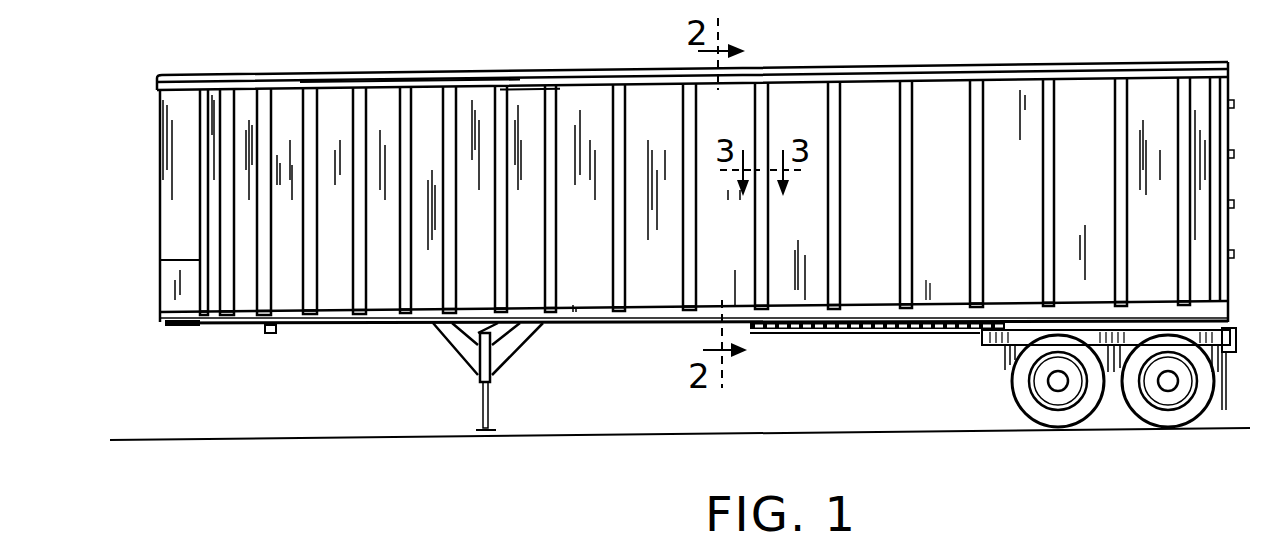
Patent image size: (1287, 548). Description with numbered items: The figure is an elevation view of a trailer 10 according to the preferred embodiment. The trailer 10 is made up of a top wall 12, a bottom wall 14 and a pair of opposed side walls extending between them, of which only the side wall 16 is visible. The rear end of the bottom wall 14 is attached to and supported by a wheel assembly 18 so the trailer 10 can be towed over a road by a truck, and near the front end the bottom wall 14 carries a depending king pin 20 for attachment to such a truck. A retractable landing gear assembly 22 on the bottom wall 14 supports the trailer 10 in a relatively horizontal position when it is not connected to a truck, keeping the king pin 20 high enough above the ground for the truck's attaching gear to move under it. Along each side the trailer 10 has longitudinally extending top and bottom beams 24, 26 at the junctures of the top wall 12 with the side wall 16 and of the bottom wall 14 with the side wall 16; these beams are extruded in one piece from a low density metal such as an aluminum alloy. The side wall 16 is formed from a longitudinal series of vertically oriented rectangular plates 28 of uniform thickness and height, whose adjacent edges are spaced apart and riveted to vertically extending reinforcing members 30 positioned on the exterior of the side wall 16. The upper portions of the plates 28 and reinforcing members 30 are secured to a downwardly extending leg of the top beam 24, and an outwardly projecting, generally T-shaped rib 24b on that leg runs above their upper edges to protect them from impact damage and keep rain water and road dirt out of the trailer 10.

The trailer 10 is at (922, 58).
The top wall 12 is at (345, 74).
The bottom wall 14 is at (655, 325).
The side wall 16 is at (952, 189).
The wheel assembly 18 is at (1002, 368).
The king pin 20 is at (270, 333).
The landing gear assembly 22 is at (468, 373).
The top beam 24 is at (406, 86).
The T-shaped rib 24b is at (516, 86).
The bottom beam 26 is at (596, 313).
The rectangular plates 28 is at (740, 236).
The reinforcing member 30 is at (622, 103).